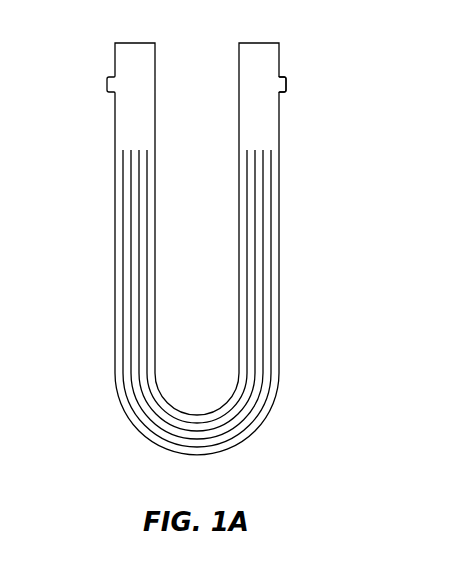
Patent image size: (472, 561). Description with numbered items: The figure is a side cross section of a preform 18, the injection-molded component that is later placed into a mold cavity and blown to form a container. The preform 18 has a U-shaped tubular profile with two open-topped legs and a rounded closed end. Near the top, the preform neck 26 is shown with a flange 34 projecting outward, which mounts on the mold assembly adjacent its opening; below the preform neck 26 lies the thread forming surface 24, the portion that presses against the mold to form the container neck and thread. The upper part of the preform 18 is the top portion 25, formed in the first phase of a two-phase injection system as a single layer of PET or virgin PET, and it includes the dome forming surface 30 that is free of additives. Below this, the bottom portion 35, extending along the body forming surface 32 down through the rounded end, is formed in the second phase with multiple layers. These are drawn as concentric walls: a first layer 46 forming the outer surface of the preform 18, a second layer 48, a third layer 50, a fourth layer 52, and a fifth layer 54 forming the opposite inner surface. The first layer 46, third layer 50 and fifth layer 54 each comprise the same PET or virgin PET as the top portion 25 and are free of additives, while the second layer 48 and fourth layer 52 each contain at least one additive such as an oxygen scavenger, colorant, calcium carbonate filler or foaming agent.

The preform 18 is at (90, 160).
The thread forming surface 24 is at (292, 149).
The top portion 25 is at (165, 68).
The preform neck 26 is at (115, 122).
The dome forming surface 30 is at (293, 120).
The body forming surface 32 is at (293, 397).
The flange 34 is at (286, 84).
The bottom portion 35 is at (300, 243).
The first layer 46 is at (120, 227).
The second layer 48 is at (128, 252).
The third layer 50 is at (137, 273).
The fourth layer 52 is at (143, 300).
The fifth layer 54 is at (150, 325).